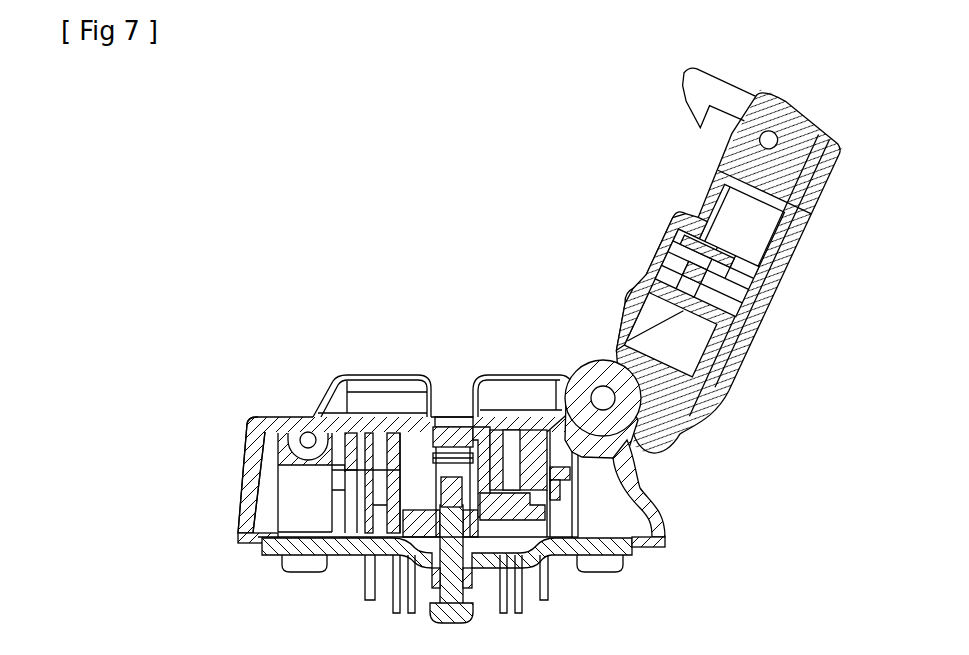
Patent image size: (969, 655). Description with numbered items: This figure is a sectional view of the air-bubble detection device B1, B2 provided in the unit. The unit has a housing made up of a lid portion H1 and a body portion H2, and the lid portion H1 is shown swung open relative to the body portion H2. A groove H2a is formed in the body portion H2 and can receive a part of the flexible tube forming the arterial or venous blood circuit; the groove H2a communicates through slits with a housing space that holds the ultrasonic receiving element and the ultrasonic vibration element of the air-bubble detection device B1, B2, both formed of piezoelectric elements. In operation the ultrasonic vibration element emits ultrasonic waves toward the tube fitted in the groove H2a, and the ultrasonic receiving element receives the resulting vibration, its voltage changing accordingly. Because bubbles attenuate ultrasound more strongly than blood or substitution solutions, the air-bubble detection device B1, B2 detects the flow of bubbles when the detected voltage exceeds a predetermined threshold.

The lid portion H1 is at (717, 367).
The body portion H2 is at (245, 492).
The groove H2a is at (432, 400).
The air-bubble detection device B1 is at (475, 293).
The air-bubble detection device B2 is at (472, 290).